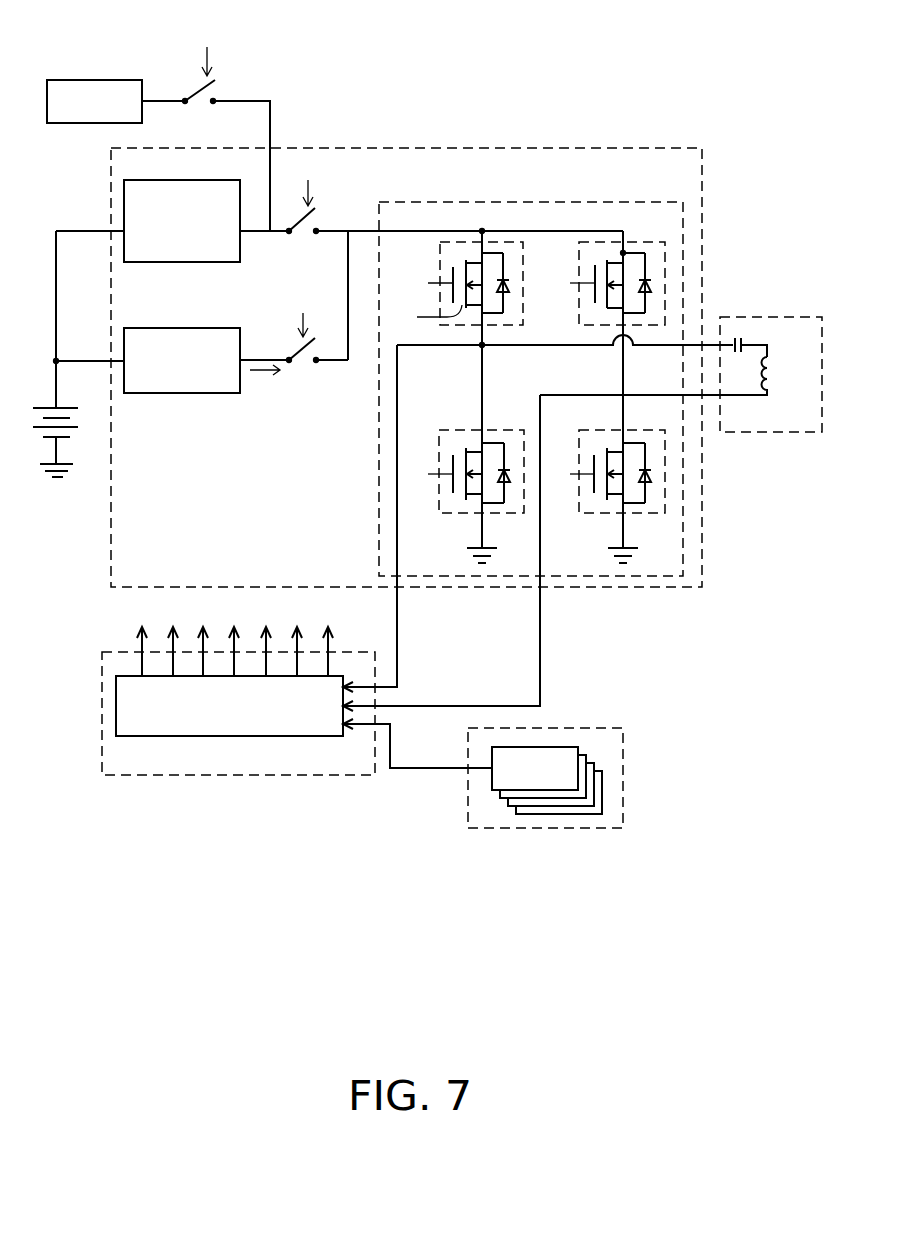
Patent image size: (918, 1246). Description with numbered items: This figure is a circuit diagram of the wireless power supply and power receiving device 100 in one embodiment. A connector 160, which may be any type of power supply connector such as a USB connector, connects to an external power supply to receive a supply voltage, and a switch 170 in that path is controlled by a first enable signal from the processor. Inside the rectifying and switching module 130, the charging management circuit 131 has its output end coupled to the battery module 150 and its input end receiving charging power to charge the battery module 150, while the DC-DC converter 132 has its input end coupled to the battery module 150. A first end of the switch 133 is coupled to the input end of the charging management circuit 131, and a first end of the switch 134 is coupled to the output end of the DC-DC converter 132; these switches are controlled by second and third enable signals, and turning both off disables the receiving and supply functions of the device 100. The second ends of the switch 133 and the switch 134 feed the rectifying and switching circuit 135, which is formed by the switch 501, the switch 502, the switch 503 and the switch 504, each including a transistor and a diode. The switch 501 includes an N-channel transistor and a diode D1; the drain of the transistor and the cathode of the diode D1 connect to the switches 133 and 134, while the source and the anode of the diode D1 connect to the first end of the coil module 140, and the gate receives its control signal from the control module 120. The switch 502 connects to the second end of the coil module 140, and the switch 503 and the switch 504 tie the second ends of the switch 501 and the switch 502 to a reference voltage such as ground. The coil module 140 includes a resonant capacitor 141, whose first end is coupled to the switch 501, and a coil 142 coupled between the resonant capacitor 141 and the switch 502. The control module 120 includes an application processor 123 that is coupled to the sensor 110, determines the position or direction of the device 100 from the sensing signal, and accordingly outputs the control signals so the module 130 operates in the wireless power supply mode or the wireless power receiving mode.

The wireless power supply and power receiving device 100 is at (413, 849).
The sensor 110 is at (625, 770).
The control module 120 is at (238, 715).
The application processor 123 is at (228, 687).
The rectifying and switching module 130 is at (480, 147).
The charging management circuit 131 is at (165, 262).
The DC-DC converter 132 is at (167, 394).
The switch 133 is at (303, 234).
The switch 134 is at (303, 363).
The rectifying and switching circuit 135 is at (380, 445).
The coil module 140 is at (681, 411).
The resonant capacitor 141 is at (738, 353).
The coil 142 is at (675, 390).
The battery module 150 is at (78, 418).
The connector 160 is at (97, 79).
The switch 170 is at (198, 107).
The switch 501 is at (437, 247).
The switch 502 is at (643, 242).
The switch 503 is at (462, 517).
The switch 504 is at (603, 517).
The diode D1 is at (513, 287).